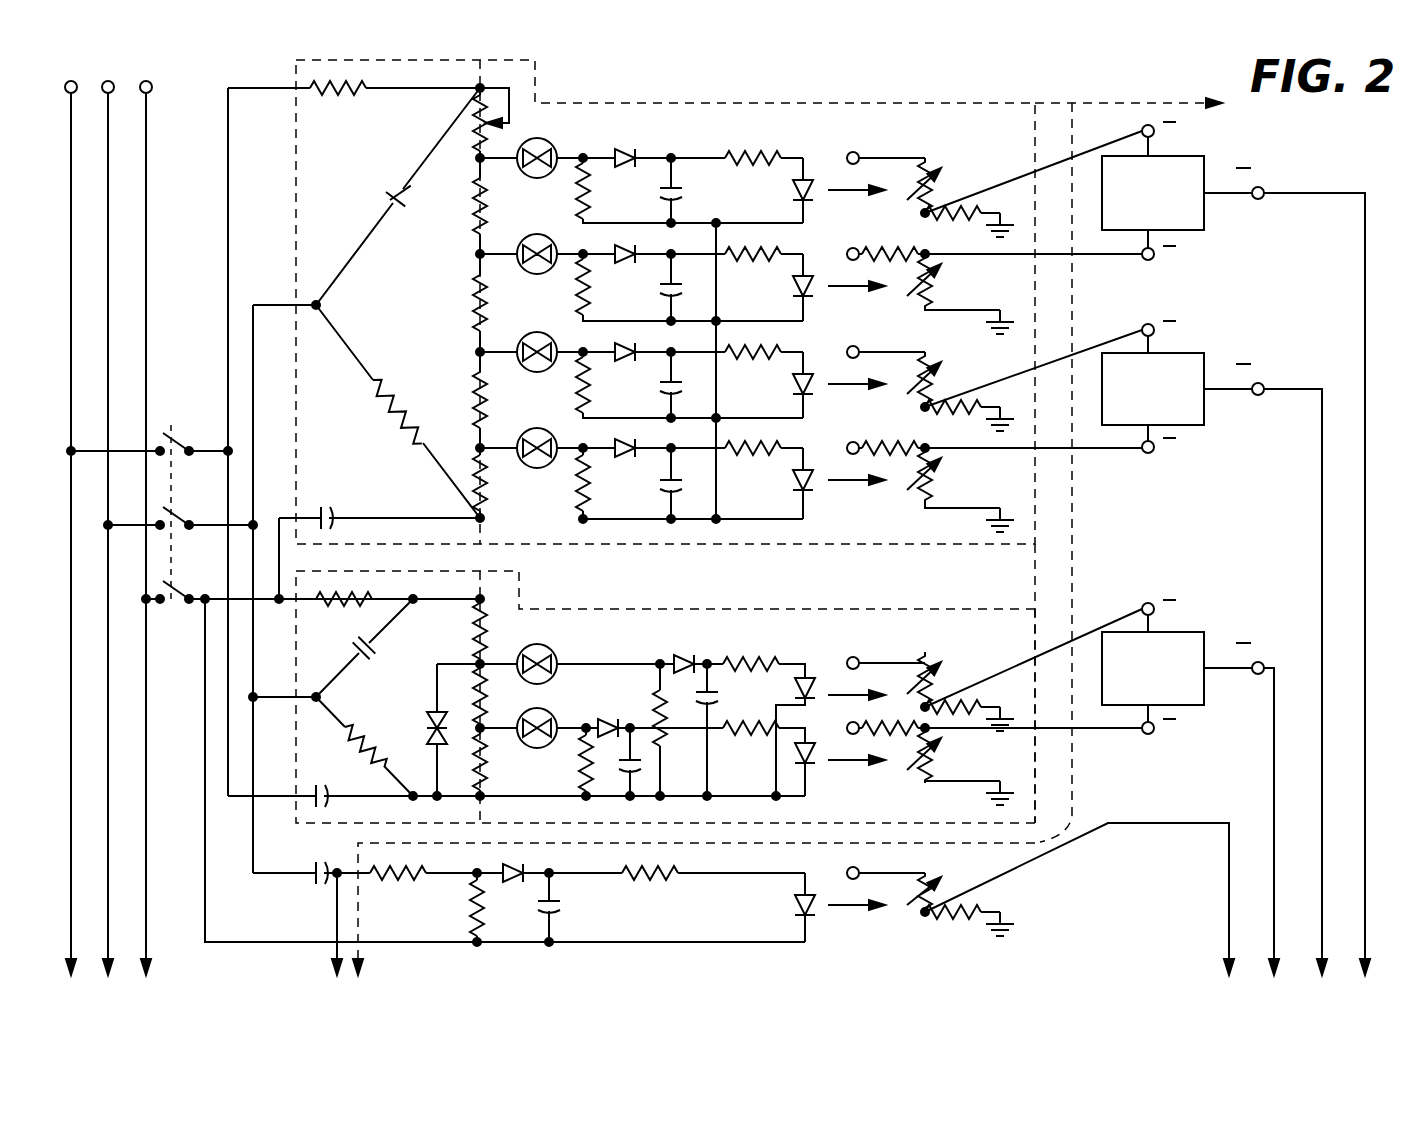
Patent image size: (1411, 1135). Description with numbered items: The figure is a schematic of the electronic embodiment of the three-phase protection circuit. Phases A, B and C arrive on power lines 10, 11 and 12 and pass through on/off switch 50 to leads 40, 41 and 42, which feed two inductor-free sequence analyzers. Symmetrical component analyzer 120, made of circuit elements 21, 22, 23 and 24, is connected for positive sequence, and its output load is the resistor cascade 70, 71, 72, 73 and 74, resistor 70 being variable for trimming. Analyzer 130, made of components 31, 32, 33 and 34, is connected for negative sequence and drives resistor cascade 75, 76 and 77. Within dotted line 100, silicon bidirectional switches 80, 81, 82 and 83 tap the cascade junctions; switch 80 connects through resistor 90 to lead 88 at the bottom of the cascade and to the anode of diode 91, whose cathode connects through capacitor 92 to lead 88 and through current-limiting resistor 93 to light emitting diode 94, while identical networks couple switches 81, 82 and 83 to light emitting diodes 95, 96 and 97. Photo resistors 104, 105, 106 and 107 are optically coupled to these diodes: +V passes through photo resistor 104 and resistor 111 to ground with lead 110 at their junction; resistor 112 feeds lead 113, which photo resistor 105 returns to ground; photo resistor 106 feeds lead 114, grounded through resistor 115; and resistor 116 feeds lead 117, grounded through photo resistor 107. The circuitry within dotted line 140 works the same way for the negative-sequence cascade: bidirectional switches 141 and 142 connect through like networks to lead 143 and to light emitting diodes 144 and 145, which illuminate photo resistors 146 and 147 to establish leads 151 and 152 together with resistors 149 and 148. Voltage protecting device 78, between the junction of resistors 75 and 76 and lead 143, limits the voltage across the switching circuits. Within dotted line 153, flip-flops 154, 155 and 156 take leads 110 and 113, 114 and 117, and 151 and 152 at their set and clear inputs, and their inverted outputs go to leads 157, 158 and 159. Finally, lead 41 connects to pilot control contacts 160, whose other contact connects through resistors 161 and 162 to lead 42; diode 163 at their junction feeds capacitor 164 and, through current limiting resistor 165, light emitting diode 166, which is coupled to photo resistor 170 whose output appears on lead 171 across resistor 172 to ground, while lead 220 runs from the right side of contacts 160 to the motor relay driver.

The power line 10 is at (71, 218).
The power line 11 is at (108, 238).
The power line 12 is at (146, 258).
The circuit element 21 is at (328, 92).
The circuit element 22 is at (418, 400).
The circuit element 23 is at (378, 194).
The circuit element 24 is at (332, 512).
The component 31 is at (345, 603).
The component 32 is at (370, 735).
The component 33 is at (352, 648).
The component 34 is at (330, 792).
The lead 40 is at (228, 300).
The lead 41 is at (213, 520).
The lead 42 is at (205, 643).
The on/off switch 50 is at (175, 440).
The resistor 70 is at (490, 124).
The resistor 71 is at (480, 205).
The resistor 72 is at (480, 293).
The resistor 73 is at (480, 395).
The resistor 74 is at (480, 452).
The resistor 75 is at (480, 632).
The resistor 76 is at (480, 690).
The resistor 77 is at (480, 770).
The voltage protecting device 78 is at (428, 722).
The silicon bidirectional switch 80 is at (545, 140).
The silicon bidirectional switch 81 is at (532, 236).
The silicon bidirectional switch 82 is at (525, 335).
The silicon bidirectional switch 83 is at (530, 432).
The lead 88 is at (716, 223).
The resistor 90 is at (583, 190).
The diode 91 is at (625, 148).
The capacitor 92 is at (675, 196).
The current-limiting resistor 93 is at (755, 150).
The light emitting diode 94 is at (808, 180).
The light emitting diode 95 is at (806, 278).
The light emitting diode 96 is at (806, 378).
The light emitting diode 97 is at (806, 475).
The voltage responsive switching means 100 is at (790, 103).
The photo resistor 104 is at (930, 165).
The photo resistor 105 is at (930, 285).
The photo resistor 106 is at (930, 365).
The photo resistor 107 is at (918, 498).
The lead 110 is at (1048, 155).
The resistor 111 is at (965, 215).
The resistor 112 is at (888, 254).
The lead 113 is at (1052, 254).
The lead 114 is at (1055, 352).
The resistor 115 is at (965, 407).
The resistor 116 is at (885, 448).
The lead 117 is at (1052, 448).
The symmetrical component analyzer 120 is at (296, 133).
The symmetrical component analyzer 130 is at (415, 571).
The voltage responsive switching means 140 is at (640, 609).
The bidirectional silicon switch 141 is at (548, 650).
The bidirectional silicon switch 142 is at (548, 710).
The lead 143 is at (505, 796).
The light emitting diode 144 is at (808, 678).
The light emitting diode 145 is at (812, 763).
The photo resistor 146 is at (932, 662).
The photo resistor 147 is at (920, 772).
The resistor 148 is at (900, 728).
The resistor 149 is at (960, 707).
The lead 151 is at (1055, 648).
The lead 152 is at (1055, 728).
The logic and control portion 153 is at (1140, 103).
The flip-flop 154 is at (1200, 156).
The flip-flop 155 is at (1200, 353).
The flip-flop 156 is at (1200, 632).
The lead 157 is at (1365, 415).
The lead 158 is at (1322, 488).
The lead 159 is at (1274, 738).
The pilot control contacts 160 is at (320, 865).
The resistor 161 is at (395, 873).
The resistor 162 is at (470, 900).
The diode 163 is at (513, 880).
The capacitor 164 is at (555, 905).
The current limiting resistor 165 is at (650, 873).
The light emitting diode 166 is at (798, 905).
The photo resistor 170 is at (930, 875).
The lead 171 is at (1229, 912).
The resistor 172 is at (968, 915).
The lead 220 is at (337, 945).